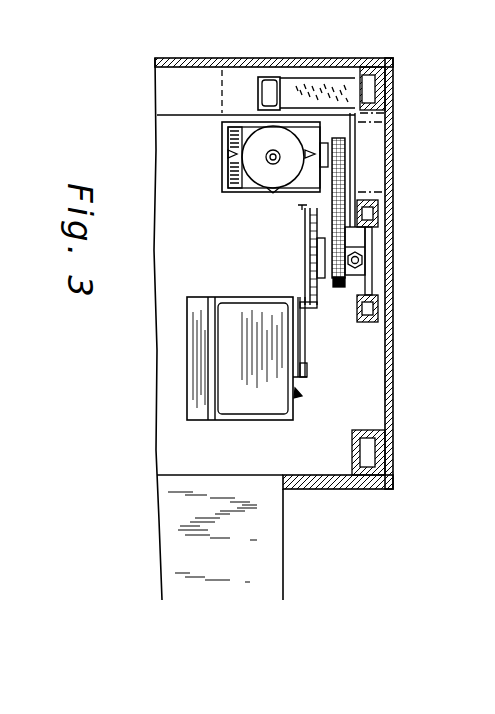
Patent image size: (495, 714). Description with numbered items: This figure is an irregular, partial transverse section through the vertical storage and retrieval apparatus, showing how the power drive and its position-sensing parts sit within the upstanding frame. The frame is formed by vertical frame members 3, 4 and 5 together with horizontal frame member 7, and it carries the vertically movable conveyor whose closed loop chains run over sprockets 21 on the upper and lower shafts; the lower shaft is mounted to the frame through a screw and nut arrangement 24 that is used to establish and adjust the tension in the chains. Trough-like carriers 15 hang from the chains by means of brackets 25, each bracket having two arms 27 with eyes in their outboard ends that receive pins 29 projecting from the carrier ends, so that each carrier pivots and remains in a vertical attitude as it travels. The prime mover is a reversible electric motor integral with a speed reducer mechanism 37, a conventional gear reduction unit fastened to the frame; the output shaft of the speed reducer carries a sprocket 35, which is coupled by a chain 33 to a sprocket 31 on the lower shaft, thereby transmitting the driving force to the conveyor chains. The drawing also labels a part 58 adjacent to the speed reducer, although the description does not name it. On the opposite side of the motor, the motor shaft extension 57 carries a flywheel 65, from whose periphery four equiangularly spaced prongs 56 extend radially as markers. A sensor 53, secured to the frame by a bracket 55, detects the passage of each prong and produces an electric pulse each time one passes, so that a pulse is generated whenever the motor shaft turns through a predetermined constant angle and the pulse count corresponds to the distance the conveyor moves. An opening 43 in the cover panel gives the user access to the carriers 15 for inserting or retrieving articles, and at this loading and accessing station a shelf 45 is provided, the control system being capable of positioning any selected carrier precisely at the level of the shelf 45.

The vertical frame member 3 is at (385, 88).
The vertical frame member 4 is at (378, 212).
The vertical frame member 5 is at (390, 470).
The horizontal frame member 7 is at (373, 390).
The carrier 15 is at (210, 418).
The sprocket 21 is at (303, 295).
The screw and nut arrangement 24 is at (372, 260).
The bracket 25 is at (298, 395).
The arm 27 is at (308, 353).
The pin 29 is at (305, 378).
The sprocket 31 is at (340, 288).
The chain 33 is at (355, 229).
The sprocket 35 is at (347, 155).
The speed reducer mechanism 37 is at (243, 192).
The opening 43 is at (285, 480).
The shelf 45 is at (275, 598).
The sensor 53 is at (282, 57).
The bracket 55 is at (332, 88).
The prong 56 is at (268, 195).
The motor shaft extension 57 is at (286, 170).
The motor mount 58 is at (222, 183).
The flywheel 65 is at (257, 145).